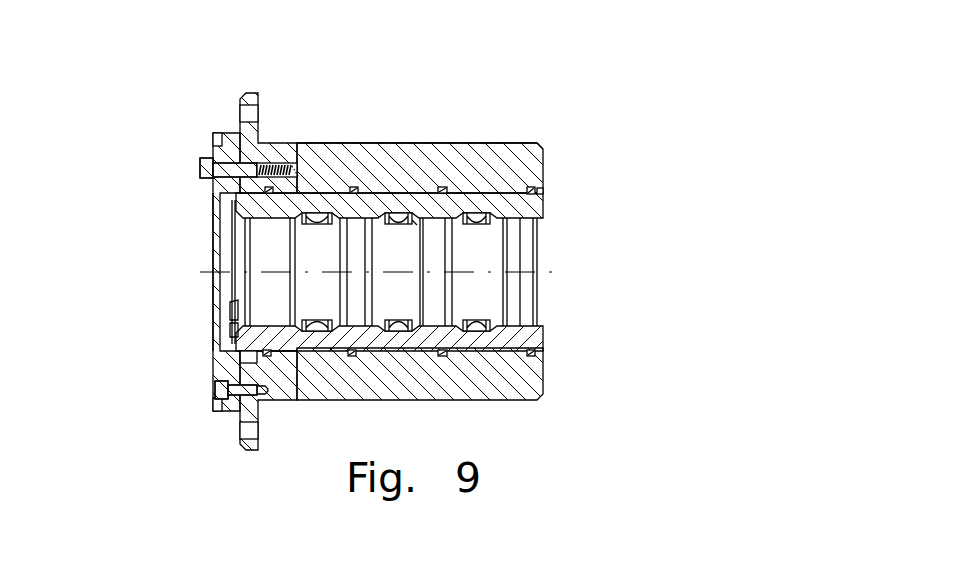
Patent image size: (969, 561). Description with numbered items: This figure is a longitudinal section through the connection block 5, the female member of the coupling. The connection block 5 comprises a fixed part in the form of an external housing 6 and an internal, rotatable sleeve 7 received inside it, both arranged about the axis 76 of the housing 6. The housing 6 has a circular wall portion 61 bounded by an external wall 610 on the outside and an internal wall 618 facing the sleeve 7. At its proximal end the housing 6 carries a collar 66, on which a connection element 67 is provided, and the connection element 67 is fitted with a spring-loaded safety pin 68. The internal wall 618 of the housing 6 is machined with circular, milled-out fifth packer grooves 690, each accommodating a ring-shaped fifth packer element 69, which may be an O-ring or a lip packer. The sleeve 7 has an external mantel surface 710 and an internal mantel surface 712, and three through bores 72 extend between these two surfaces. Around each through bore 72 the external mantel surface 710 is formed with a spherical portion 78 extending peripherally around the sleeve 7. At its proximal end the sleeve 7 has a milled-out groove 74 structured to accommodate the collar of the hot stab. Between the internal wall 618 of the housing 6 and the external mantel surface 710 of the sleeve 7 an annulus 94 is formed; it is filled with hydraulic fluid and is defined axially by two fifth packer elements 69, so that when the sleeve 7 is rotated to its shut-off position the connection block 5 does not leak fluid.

The connection block 5 is at (148, 178).
The external housing 6 is at (540, 147).
The circular wall portion 61 is at (507, 143).
The external wall 610 is at (436, 143).
The internal wall 618 is at (411, 228).
The collar 66 is at (255, 92).
The connection element 67 is at (217, 131).
The spring-loaded safety pin 68 is at (197, 160).
The fifth packer element 69 is at (543, 192).
The fifth packer groove 690 is at (540, 187).
The sleeve 7 is at (543, 203).
The through bore 72 is at (493, 218).
The milled-out groove 74 is at (230, 303).
The axis 76 is at (205, 270).
The spherical portion 78 is at (482, 224).
The external mantel surface 710 is at (543, 365).
The internal mantel surface 712 is at (543, 349).
The annulus 94 is at (340, 158).